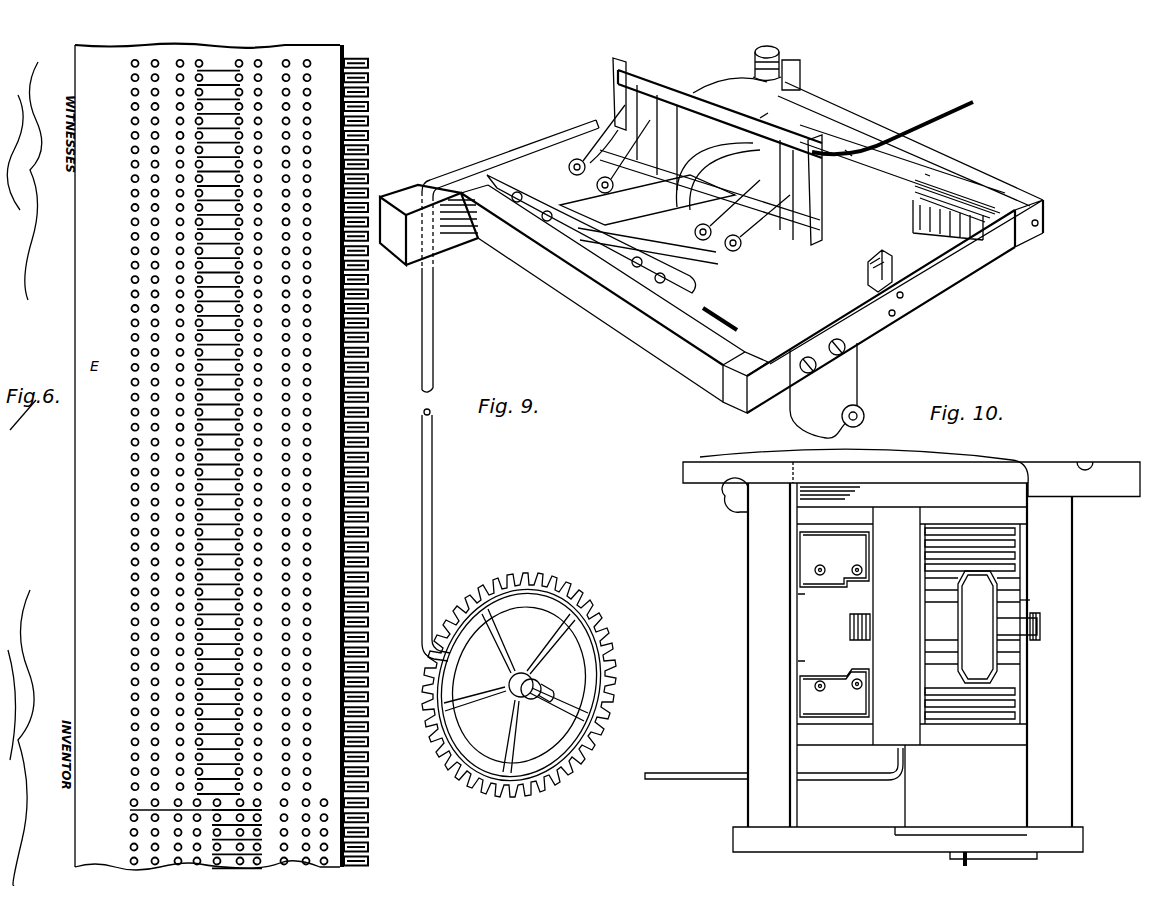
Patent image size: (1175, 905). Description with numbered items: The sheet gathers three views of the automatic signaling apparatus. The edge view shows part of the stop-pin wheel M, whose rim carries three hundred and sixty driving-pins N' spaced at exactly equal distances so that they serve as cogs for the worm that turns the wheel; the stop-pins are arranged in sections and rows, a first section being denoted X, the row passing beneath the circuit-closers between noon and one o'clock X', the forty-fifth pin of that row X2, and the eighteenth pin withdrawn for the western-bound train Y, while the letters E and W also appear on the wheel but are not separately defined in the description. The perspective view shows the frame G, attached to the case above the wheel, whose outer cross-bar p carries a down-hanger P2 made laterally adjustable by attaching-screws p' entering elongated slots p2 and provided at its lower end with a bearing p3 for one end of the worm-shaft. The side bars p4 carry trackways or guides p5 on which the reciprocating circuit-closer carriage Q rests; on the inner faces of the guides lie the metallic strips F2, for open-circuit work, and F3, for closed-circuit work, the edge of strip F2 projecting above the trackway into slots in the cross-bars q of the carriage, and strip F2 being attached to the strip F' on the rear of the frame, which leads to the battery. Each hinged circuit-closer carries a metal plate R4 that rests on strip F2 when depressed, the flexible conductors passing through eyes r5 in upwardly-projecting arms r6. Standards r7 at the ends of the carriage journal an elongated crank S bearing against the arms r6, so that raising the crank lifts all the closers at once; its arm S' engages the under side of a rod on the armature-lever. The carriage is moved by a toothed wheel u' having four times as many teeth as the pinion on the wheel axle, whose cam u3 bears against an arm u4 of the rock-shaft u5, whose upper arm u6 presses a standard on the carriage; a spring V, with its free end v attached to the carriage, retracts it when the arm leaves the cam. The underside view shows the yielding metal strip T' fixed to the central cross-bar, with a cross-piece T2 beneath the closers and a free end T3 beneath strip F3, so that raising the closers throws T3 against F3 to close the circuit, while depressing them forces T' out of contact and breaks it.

In FIG. 6, the record card E is at (207, 457).
In FIG. 6, the card edge W is at (328, 456).
In FIG. 6, the driving-pins N' is at (366, 462).
In FIG. 6, the section of stop-pins X is at (303, 229).
In FIG. 6, the row of stop-pins X' is at (135, 449).
In FIG. 6, the forty-fifth stop-pin X2 is at (180, 138).
In FIG. 6, the eighteenth stop-pin Y is at (290, 532).
In FIG. 6, the stop-pin wheel M is at (106, 693).
In FIG. 9, the side bars p4 is at (977, 164).
In FIG. 9, the trackways or guides p5 is at (738, 326).
In FIG. 9, the reciprocating circuit-closer carriage Q is at (659, 239).
In FIG. 9, the down-hanger P2 is at (821, 390).
In FIG. 9, the bearing p3 is at (848, 428).
In FIG. 9, the attaching-screws p' is at (805, 351).
In FIG. 9, the elongated slots p2 is at (833, 359).
In FIG. 9, the outer cross-bar p is at (903, 301).
In FIG. 9, the metallic strip F3 is at (925, 236).
In FIG. 10, the metallic strip F3 is at (1030, 600).
In FIG. 9, the elongated crank S is at (711, 144).
In FIG. 9, the standards r7 is at (880, 218).
In FIG. 9, the eyes or loops r5 is at (577, 158).
In FIG. 9, the upwardly-projecting arms r6 is at (605, 176).
In FIG. 9, the free end of spring v is at (620, 130).
In FIG. 9, the spring V is at (738, 128).
In FIG. 9, the cross-bars q is at (927, 172).
In FIG. 9, the metal plate R4 is at (845, 150).
In FIG. 9, the arm S' is at (892, 128).
In FIG. 10, the arm S' is at (774, 764).
In FIG. 9, the arm of rock-shaft u6 is at (510, 158).
In FIG. 9, the rock-shaft u5 is at (439, 417).
In FIG. 9, the arm u4 is at (431, 659).
In FIG. 9, the toothed wheel u' is at (522, 685).
In FIG. 9, the cam u3 is at (516, 691).
In FIG. 10, the frame G is at (911, 479).
In FIG. 10, the metal strip F' is at (864, 459).
In FIG. 10, the metallic strip F2 is at (902, 672).
In FIG. 10, the yielding metal strip T' is at (834, 624).
In FIG. 10, the cross-piece T2 is at (972, 624).
In FIG. 10, the free end T3 is at (1027, 626).